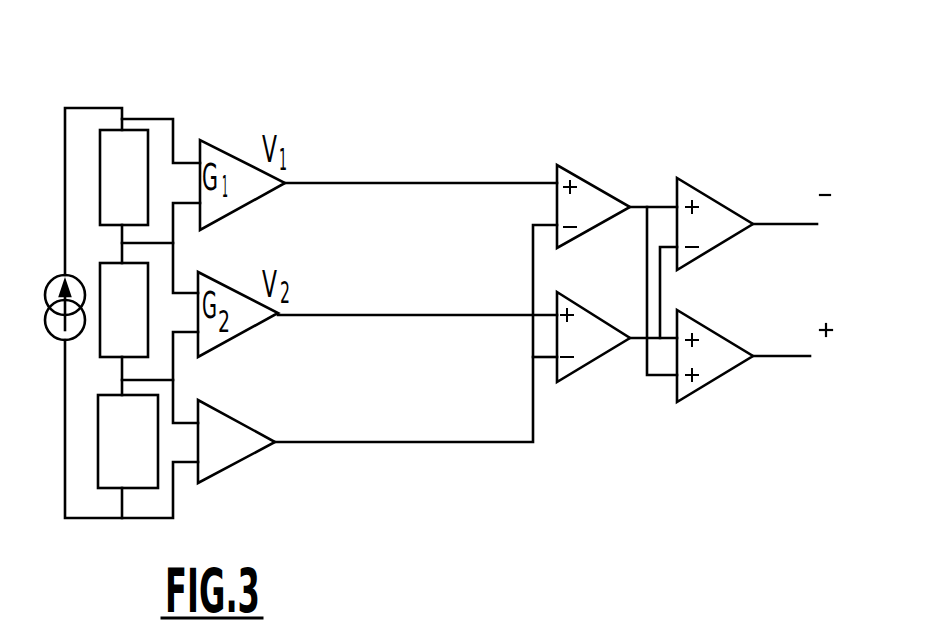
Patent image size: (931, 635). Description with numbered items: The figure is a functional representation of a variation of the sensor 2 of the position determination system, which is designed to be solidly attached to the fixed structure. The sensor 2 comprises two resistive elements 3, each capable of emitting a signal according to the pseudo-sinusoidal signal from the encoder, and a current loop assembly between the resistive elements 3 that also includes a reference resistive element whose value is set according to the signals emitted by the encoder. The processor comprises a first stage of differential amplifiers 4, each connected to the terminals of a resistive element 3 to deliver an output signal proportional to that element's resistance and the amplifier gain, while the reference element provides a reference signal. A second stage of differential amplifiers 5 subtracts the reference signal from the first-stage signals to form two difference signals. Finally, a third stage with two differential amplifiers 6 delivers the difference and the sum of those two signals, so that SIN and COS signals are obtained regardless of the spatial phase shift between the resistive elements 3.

The sensor 2 is at (578, 128).
The resistive elements 3 is at (100, 197).
The first stage of differential amplifiers 4 is at (247, 457).
The second stage of differential amplifiers 5 is at (593, 363).
The third stage of differential amplifiers 6 is at (722, 377).